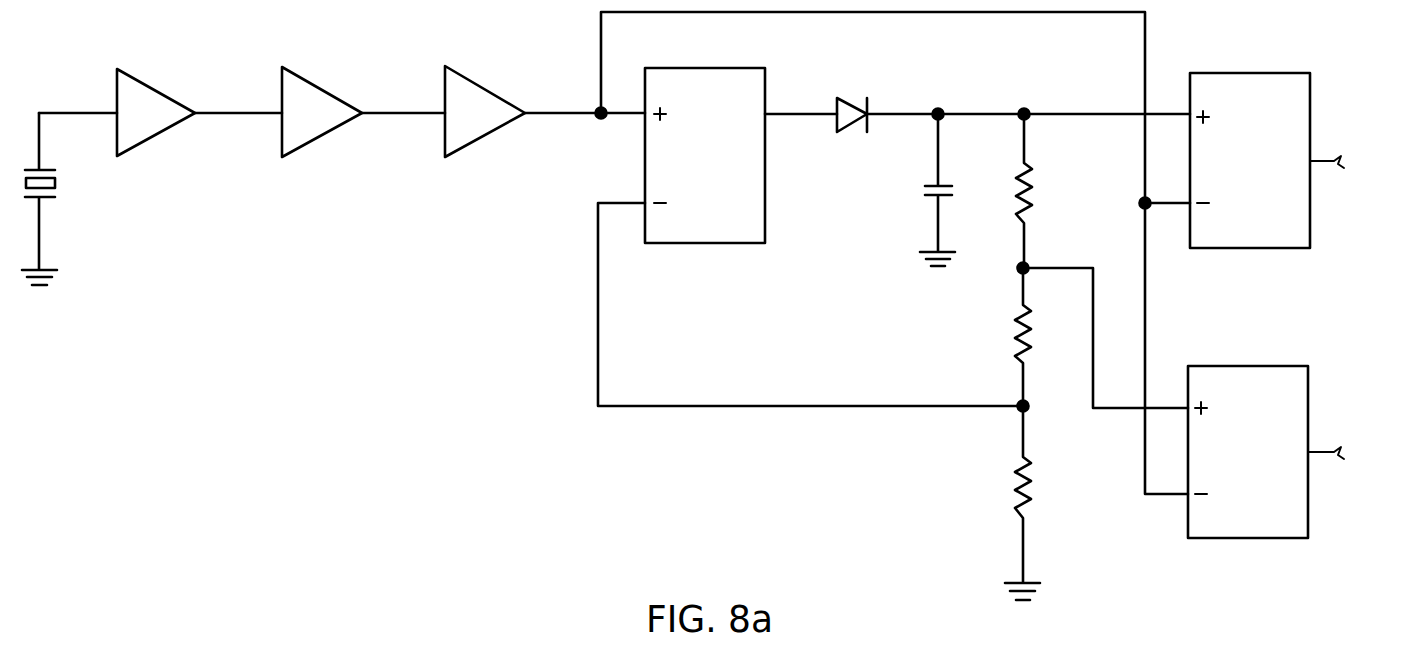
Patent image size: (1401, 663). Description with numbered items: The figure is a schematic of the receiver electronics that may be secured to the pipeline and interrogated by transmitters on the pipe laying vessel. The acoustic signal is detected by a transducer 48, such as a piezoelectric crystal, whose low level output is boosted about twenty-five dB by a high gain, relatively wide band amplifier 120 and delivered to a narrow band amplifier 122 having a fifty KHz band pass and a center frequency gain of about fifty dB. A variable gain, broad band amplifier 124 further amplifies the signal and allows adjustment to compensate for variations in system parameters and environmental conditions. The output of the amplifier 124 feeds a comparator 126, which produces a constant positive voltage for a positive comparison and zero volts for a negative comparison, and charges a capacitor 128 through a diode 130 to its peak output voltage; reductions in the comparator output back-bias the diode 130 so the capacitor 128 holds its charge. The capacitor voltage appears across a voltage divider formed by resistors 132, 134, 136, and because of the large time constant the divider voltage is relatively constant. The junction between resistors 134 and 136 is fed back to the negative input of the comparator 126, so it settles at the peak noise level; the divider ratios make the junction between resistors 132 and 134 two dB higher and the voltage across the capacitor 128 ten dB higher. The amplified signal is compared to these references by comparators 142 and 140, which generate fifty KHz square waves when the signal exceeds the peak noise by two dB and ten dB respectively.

The transducer 48 is at (58, 178).
The high gain wide band amplifier 120 is at (164, 135).
The narrow band amplifier 122 is at (332, 135).
The variable gain broad band amplifier 124 is at (495, 135).
The comparator 126 is at (770, 171).
The capacitor 128 is at (973, 178).
The diode 130 is at (848, 93).
The resistor 132 is at (1037, 189).
The resistor 134 is at (1010, 340).
The resistor 136 is at (1038, 507).
The comparator 140 is at (1313, 120).
The comparator 142 is at (1310, 412).